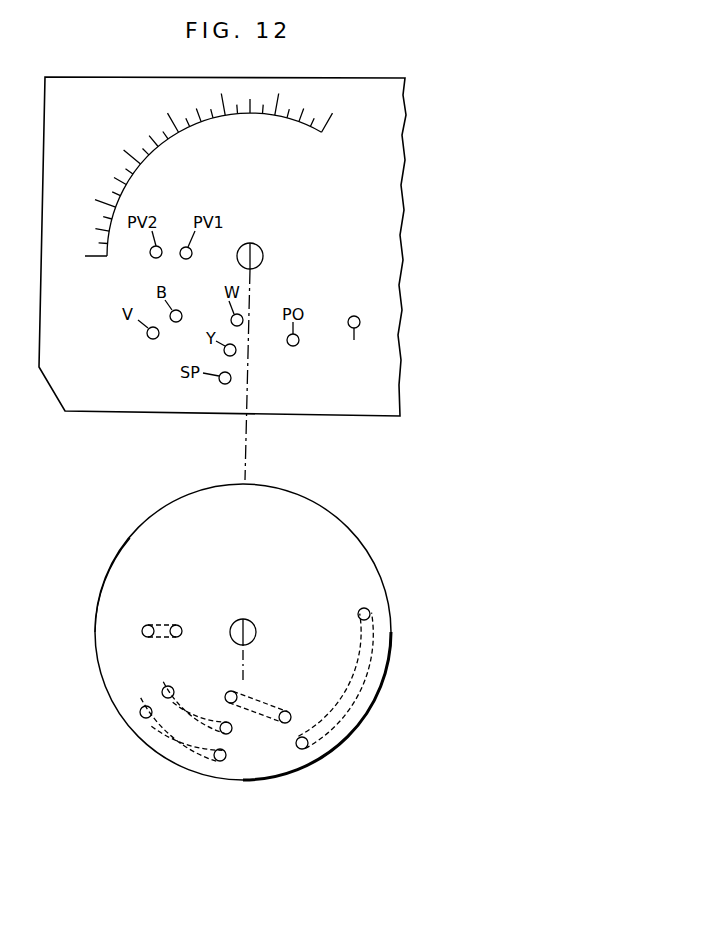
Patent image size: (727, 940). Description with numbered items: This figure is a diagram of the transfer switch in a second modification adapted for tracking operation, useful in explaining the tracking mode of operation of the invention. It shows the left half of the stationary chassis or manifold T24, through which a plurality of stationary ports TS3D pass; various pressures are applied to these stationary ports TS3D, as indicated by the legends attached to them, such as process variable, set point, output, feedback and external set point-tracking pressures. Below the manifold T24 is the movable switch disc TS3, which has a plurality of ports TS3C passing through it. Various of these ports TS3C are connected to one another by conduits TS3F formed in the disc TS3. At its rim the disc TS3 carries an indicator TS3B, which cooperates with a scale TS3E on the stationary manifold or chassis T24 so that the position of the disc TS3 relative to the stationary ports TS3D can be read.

The chassis or manifold T24 is at (128, 88).
The scale TS3E is at (148, 118).
The stationary ports TS3D is at (372, 316).
The movable switch disc TS3 is at (343, 543).
The indicator TS3B is at (98, 628).
The conduits TS3F is at (362, 695).
The ports TS3C is at (219, 764).